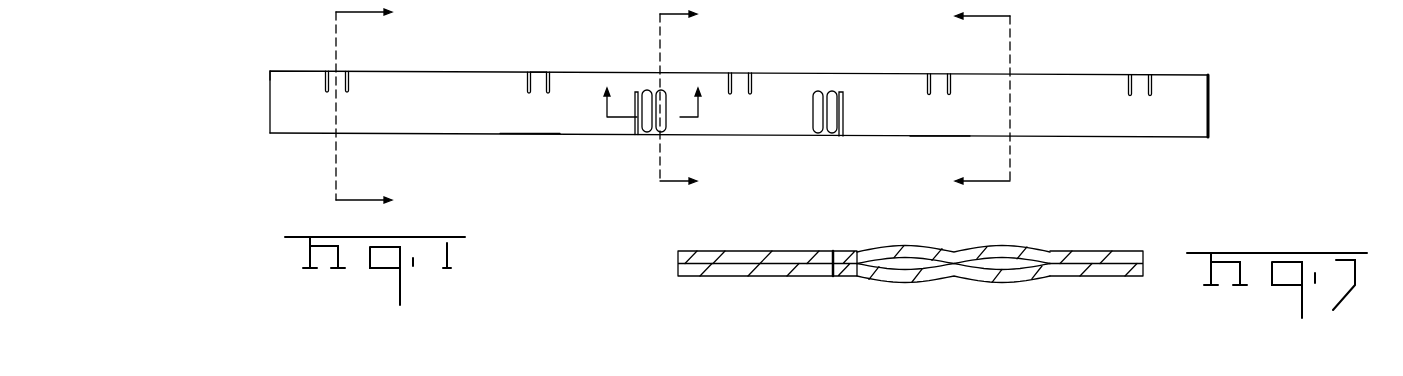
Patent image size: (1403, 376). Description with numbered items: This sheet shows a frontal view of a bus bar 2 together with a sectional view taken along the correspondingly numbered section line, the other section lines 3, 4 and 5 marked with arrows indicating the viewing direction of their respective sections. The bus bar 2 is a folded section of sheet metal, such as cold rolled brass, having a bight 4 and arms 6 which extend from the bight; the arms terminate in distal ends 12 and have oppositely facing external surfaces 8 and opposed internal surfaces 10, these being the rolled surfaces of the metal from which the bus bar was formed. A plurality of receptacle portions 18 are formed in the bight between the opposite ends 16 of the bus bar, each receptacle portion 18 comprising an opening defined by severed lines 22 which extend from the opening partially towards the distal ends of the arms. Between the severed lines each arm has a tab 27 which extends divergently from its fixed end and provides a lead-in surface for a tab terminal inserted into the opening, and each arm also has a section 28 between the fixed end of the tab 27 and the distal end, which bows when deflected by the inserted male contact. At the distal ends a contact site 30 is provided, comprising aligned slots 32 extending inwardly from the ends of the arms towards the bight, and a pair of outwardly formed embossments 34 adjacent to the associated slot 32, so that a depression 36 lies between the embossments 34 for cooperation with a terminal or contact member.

In FIG. 1, the bus bar 2 is at (1290, 105).
In FIG. 1, the section line 3- 3 is at (700, 99).
In FIG. 1, the bight 4 is at (1193, 46).
In FIG. 1, the section line 5- 5 is at (651, 95).
In FIG. 1, the arms 6 is at (1186, 124).
In FIG. 5, the external surfaces 8 is at (775, 250).
In FIG. 5, the internal surfaces 10 is at (1108, 267).
In FIG. 1, the distal ends 12 is at (1112, 138).
In FIG. 1, the opposite ends 16 is at (271, 70).
In FIG. 1, the receptacle portions 18 is at (539, 71).
In FIG. 1, the severed lines 22 is at (552, 80).
In FIG. 1, the tab 27 is at (540, 93).
In FIG. 1, the section 28 is at (543, 117).
In FIG. 1, the contact site 30 is at (653, 137).
In FIG. 1, the slots 32 is at (632, 125).
In FIG. 5, the slots 32 is at (847, 251).
In FIG. 1, the embossments 34 is at (833, 91).
In FIG. 5, the embossments 34 is at (1005, 246).
In FIG. 5, the depression 36 is at (953, 252).